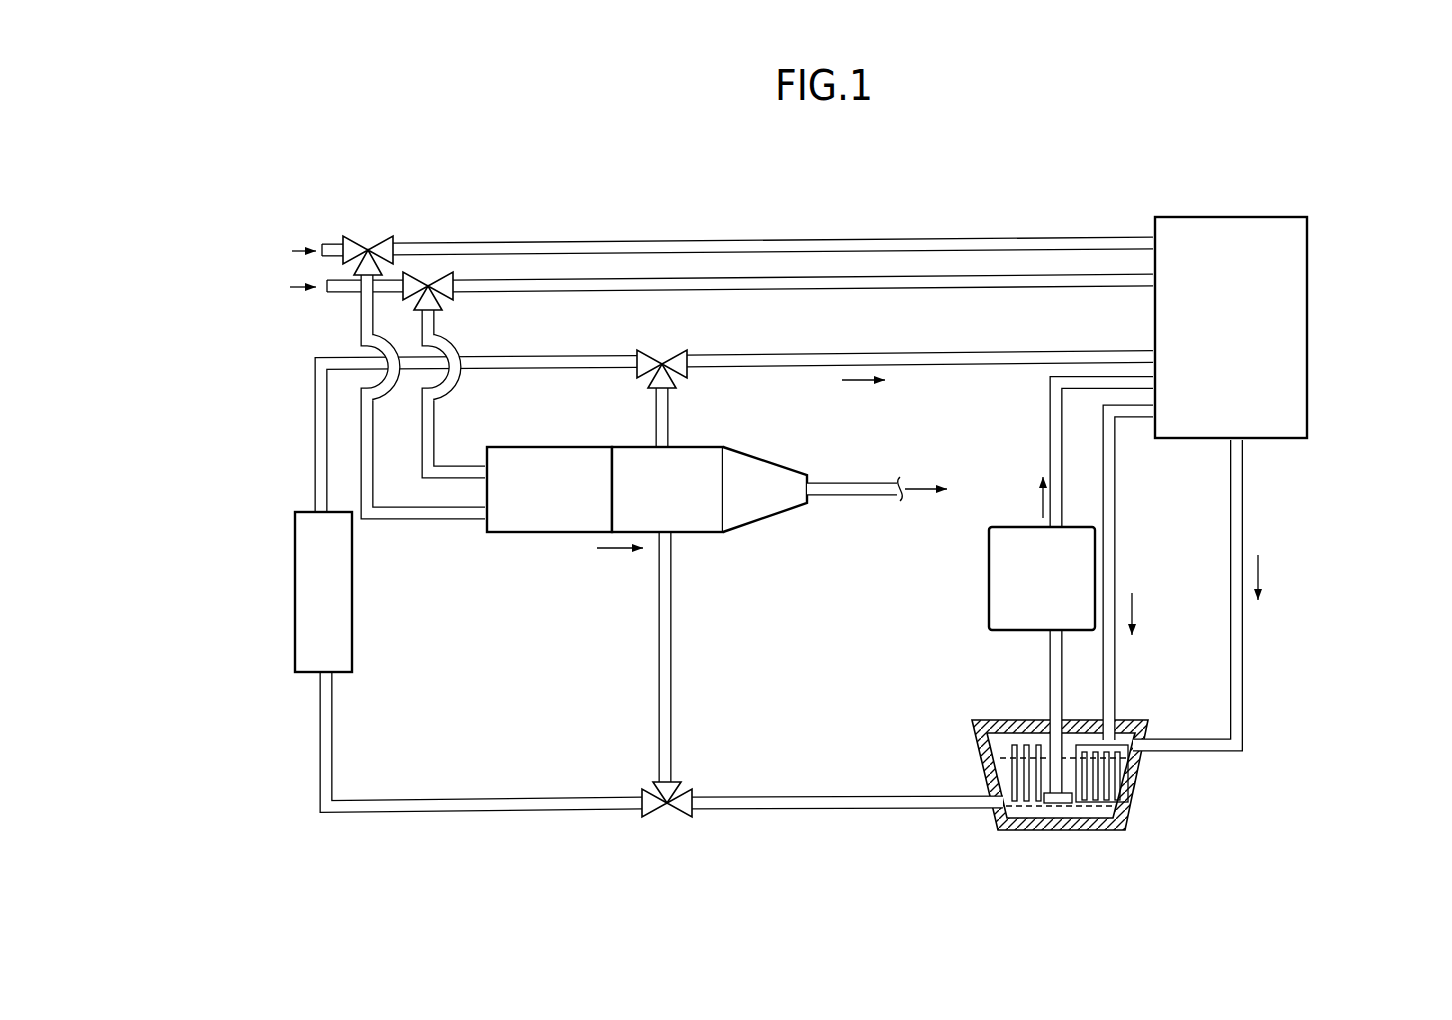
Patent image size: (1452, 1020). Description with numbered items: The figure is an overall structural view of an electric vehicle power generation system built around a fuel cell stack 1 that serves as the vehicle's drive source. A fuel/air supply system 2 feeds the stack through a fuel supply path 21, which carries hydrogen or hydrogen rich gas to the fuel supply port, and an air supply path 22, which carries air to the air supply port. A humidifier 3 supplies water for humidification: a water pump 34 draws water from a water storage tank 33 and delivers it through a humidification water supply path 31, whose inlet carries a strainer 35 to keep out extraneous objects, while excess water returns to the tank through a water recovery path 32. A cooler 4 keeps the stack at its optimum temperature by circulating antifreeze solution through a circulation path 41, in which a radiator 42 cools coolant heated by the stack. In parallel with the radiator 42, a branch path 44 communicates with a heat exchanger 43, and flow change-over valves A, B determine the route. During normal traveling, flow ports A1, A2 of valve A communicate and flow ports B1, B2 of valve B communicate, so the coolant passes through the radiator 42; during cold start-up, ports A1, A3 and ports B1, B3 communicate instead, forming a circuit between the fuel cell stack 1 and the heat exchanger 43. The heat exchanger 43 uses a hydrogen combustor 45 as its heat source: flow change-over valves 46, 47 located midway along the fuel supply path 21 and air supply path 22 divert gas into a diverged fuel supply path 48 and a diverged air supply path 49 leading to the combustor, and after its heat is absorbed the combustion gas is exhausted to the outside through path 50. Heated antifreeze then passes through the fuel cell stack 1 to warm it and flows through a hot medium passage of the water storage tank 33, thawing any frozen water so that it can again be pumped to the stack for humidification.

The fuel cell stack 1 is at (1205, 213).
The fuel/air supply system 2 is at (654, 370).
The humidifier 3 is at (1177, 633).
The cooler 4 is at (812, 596).
The fuel supply path 21 is at (478, 242).
The air supply path 22 is at (792, 289).
The humidification water supply path 31 is at (1050, 427).
The water recovery path 32 is at (1120, 658).
The water storage tank 33 is at (1135, 790).
The water pump 34 is at (989, 575).
The strainer 35 is at (1060, 806).
The circulation path 41 is at (852, 352).
The radiator 42 is at (340, 675).
The heat exchanger 43 is at (702, 535).
The branch path 44 is at (673, 702).
The hydrogen combustor 45 is at (517, 535).
The flow change-over valve 46 is at (385, 242).
The flow change-over valve 47 is at (447, 292).
The diverged fuel supply path 48 is at (370, 535).
The diverged air supply path 49 is at (425, 423).
The exhaust path 50 is at (848, 497).
The flow change-over valve A is at (673, 817).
The flow port A1 is at (692, 818).
The flow port A2 is at (652, 823).
The flow port A3 is at (655, 782).
The flow change-over valve B is at (662, 339).
The flow port B1 is at (684, 353).
The flow port B2 is at (637, 353).
The flow port B3 is at (664, 387).